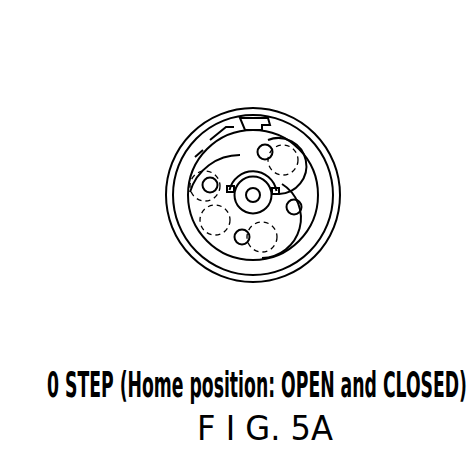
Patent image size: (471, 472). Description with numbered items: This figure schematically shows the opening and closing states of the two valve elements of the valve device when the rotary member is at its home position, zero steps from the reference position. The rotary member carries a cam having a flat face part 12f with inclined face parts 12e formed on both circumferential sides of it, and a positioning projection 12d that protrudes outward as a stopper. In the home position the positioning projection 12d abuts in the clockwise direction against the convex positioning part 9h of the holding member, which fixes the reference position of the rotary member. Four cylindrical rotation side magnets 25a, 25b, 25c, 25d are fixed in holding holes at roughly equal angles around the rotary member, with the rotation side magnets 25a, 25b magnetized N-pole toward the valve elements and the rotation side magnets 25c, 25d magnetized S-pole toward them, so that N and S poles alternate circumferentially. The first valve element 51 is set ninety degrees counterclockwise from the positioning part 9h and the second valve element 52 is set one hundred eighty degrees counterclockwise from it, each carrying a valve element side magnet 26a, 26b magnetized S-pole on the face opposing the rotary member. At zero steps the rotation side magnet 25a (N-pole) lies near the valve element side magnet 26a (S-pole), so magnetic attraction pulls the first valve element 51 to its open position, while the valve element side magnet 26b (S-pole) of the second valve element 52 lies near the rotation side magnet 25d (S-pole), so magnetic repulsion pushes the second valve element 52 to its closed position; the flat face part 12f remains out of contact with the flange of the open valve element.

The positioning part 9h is at (265, 124).
The positioning projection 12d is at (214, 125).
The inclined face parts 12e is at (282, 190).
The flat face part 12f is at (195, 155).
The rotation side magnet 25a is at (204, 180).
The rotation side magnet 25b is at (272, 149).
The rotation side magnet 25c is at (300, 212).
The rotation side magnet 25d is at (238, 245).
The valve element side magnet 26a is at (205, 232).
The valve element side magnet 26b is at (276, 248).
The first valve element 51 is at (194, 220).
The second valve element 52 is at (285, 262).